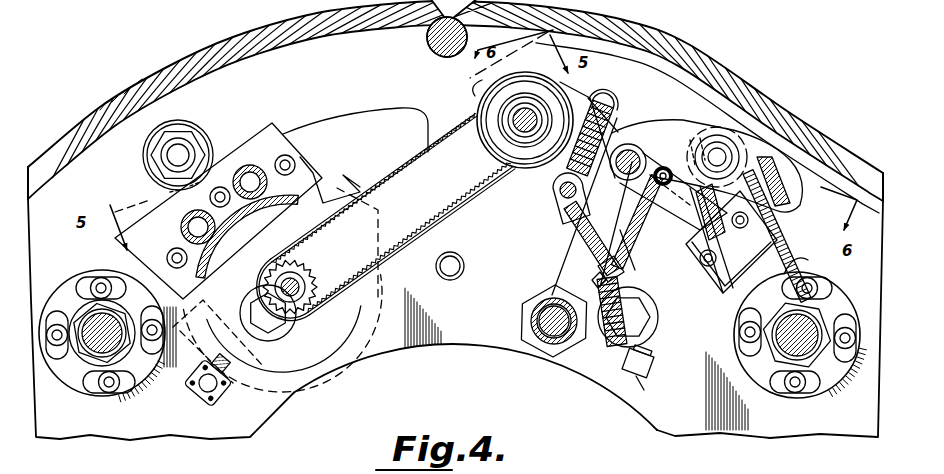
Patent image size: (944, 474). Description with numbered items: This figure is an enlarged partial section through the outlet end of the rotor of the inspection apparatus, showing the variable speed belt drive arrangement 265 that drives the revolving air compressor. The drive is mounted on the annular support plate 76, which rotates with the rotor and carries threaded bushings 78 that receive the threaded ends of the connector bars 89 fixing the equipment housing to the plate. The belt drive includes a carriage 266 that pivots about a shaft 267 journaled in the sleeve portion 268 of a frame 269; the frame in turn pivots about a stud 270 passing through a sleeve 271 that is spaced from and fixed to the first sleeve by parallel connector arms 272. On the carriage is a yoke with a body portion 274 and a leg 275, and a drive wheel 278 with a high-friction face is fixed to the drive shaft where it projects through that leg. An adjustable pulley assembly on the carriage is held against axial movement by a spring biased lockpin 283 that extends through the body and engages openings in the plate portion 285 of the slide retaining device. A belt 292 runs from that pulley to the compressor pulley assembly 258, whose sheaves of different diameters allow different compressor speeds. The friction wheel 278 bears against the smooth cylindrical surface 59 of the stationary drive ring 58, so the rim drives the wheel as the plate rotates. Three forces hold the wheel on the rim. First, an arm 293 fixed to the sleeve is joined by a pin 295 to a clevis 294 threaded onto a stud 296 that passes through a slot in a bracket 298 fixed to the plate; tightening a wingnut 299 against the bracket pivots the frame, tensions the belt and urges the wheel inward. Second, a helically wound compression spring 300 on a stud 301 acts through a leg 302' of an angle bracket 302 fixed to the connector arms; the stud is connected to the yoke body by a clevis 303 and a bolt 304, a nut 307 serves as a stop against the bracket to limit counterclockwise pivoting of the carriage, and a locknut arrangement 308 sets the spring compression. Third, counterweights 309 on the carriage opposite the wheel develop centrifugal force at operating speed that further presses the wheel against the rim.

The stationary drive ring 58 is at (500, 190).
The smooth cylindrical surface 59 is at (423, 157).
The annular support plate 76 is at (373, 347).
The threaded bushings 78 is at (73, 385).
The connector bars 89 is at (140, 387).
The pulley assembly 258 is at (268, 262).
The variable speed belt drive arrangement 265 is at (500, 317).
The carriage 266 is at (625, 130).
The shaft 267 is at (664, 146).
The sleeve portion 268 is at (632, 142).
The frame 269 is at (560, 257).
The stud 270 is at (543, 357).
The sleeve 271 is at (606, 340).
The parallel connector arms 272 is at (622, 232).
The body portion 274 is at (624, 114).
The leg 275 is at (556, 78).
The drive wheel 278 is at (468, 94).
The spring biased lockpin 283 is at (603, 90).
The plate portion 285 is at (560, 192).
The belt 292 is at (410, 157).
The arm 293 is at (645, 203).
The clevis 294 is at (680, 262).
The pin 295 is at (704, 133).
The stud 296 is at (821, 265).
The bracket 298 is at (712, 294).
The wingnut 299 is at (800, 203).
The helically wound compression spring 300 is at (652, 358).
The stud 301 is at (606, 360).
The angle bracket 302 is at (628, 269).
The leg 302' is at (551, 283).
The clevis 303 is at (560, 204).
The bolt 304 is at (636, 205).
The nut 307 is at (597, 270).
The locknut arrangement 308 is at (648, 384).
The counterweights 309 is at (785, 168).